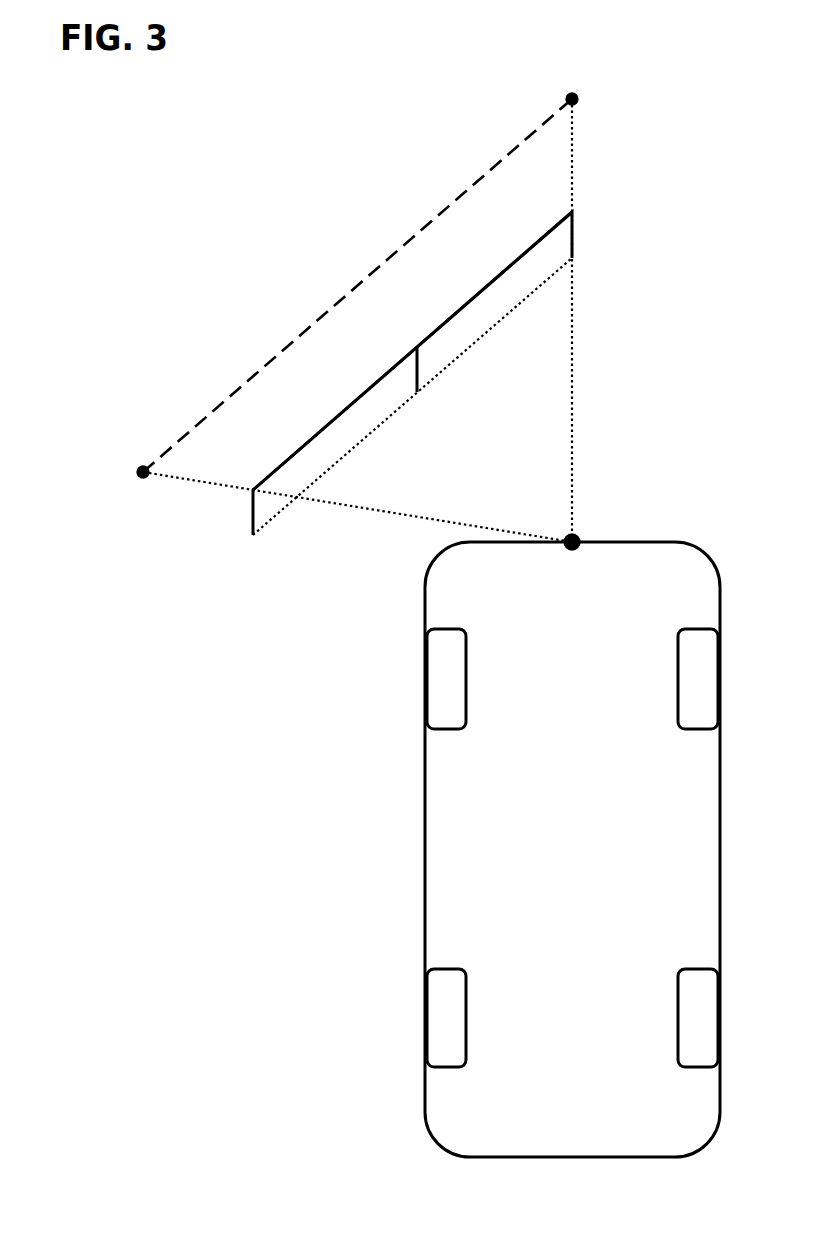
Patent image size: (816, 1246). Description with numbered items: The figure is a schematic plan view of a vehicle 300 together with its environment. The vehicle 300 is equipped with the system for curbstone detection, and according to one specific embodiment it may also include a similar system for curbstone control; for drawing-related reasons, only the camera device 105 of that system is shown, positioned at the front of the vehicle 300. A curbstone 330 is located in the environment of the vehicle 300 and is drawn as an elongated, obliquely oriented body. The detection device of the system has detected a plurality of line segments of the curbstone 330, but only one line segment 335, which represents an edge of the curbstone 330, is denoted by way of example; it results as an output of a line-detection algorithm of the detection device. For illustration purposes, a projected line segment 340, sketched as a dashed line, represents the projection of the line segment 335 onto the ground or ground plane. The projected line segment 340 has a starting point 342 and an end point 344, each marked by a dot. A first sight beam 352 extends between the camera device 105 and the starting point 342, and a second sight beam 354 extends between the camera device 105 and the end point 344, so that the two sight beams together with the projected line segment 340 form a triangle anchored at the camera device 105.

The camera device 105 is at (578, 537).
The vehicle 300 is at (424, 838).
The curbstone 330 is at (222, 522).
The line segment 335 is at (487, 283).
The projected line segment 340 is at (302, 333).
The starting point 342 is at (137, 472).
The end point 344 is at (579, 99).
The first sight beam 352 is at (343, 506).
The second sight beam 354 is at (574, 350).